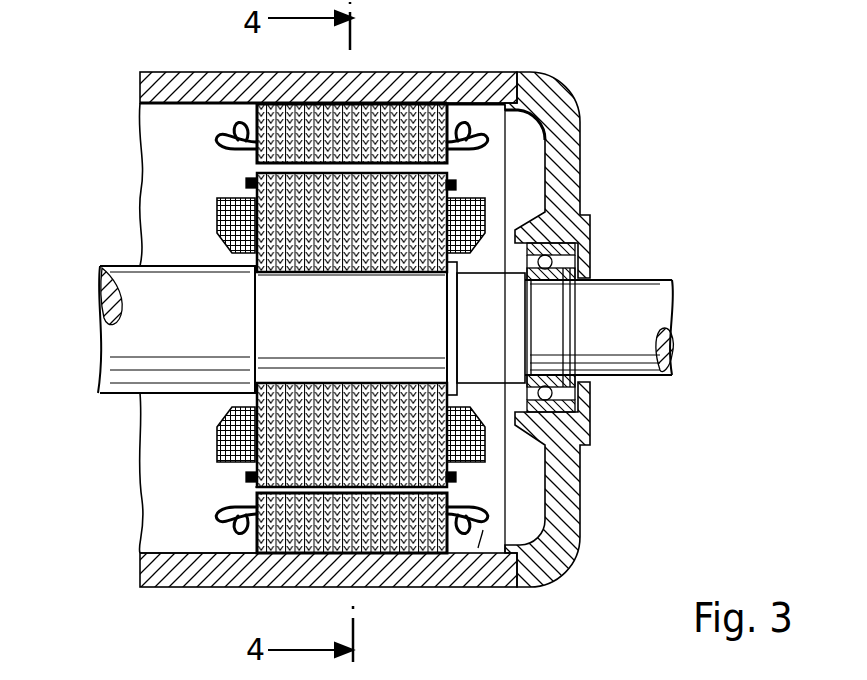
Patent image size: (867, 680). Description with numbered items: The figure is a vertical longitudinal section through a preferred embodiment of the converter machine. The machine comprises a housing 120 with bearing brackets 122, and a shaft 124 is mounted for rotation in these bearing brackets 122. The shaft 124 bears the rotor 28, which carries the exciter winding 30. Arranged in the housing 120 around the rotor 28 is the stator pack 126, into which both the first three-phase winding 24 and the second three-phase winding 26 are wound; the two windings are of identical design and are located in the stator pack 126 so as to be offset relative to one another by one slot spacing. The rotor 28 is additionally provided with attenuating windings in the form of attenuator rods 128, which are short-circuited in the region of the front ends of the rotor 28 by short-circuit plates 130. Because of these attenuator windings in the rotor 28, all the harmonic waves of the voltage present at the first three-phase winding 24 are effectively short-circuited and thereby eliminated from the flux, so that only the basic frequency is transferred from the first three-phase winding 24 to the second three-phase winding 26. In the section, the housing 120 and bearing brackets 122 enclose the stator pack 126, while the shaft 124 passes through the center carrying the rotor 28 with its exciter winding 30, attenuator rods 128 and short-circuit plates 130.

The housing 120 is at (200, 78).
The bearing bracket 122 is at (566, 146).
The shaft 124 is at (608, 296).
The stator pack 126 is at (370, 125).
The rotor 28 is at (285, 205).
The exciter winding 30 is at (233, 222).
The attenuator rods 128 is at (255, 485).
The short-circuit plates 130 is at (250, 472).
The first three-phase winding 24 is at (498, 507).
The second three-phase winding 26 is at (483, 545).